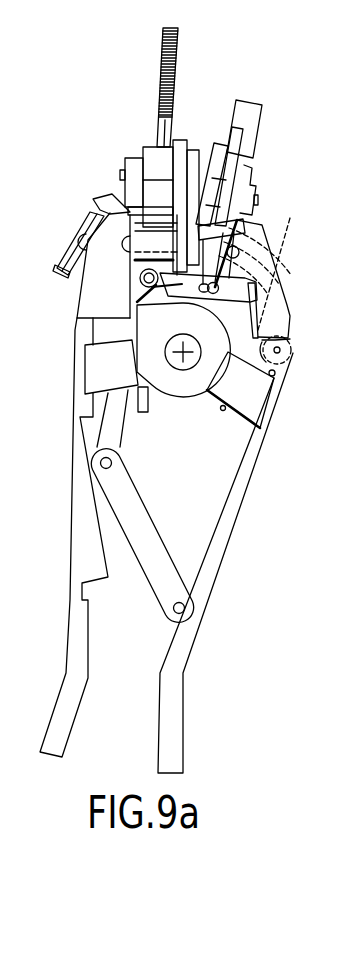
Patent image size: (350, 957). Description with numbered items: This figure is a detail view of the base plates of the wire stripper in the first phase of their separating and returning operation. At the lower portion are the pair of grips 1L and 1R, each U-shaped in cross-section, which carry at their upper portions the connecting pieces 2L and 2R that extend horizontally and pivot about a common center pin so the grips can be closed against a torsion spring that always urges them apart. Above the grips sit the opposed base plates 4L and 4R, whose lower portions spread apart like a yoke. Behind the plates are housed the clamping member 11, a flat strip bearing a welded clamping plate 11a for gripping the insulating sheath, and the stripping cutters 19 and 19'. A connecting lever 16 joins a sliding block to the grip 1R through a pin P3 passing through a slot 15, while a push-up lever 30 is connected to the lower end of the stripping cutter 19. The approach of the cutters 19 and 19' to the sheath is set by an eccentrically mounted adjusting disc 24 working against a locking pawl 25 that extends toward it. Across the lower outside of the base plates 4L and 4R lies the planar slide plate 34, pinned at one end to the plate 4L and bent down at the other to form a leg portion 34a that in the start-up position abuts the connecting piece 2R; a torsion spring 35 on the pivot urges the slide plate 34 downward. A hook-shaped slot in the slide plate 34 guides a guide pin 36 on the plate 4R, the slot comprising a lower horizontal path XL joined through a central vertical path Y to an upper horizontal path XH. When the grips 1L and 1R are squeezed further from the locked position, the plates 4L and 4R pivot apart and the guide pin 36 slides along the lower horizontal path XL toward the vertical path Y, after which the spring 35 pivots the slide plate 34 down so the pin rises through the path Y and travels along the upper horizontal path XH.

The stripping cutter 19 is at (150, 78).
The stripping cutter 19' is at (142, 110).
The base plate 4L is at (179, 147).
The base plate 4R is at (222, 143).
The clamping member 11 is at (238, 143).
The clamping plate 11a is at (256, 112).
The locking pawl 25 is at (101, 200).
The adjusting disc 24 is at (64, 258).
The guide pin 36 is at (226, 252).
The upper horizontal path XH is at (214, 289).
The slide plate 34 is at (262, 266).
The leg portion 34a is at (259, 328).
The connecting lever 16 is at (288, 276).
The central vertical path Y is at (262, 291).
The slot 15 is at (290, 339).
The pin P3 is at (281, 351).
The torsion spring 35 is at (130, 292).
The connecting piece 2L is at (92, 380).
The connecting piece 2R is at (262, 402).
The lower horizontal path XL is at (235, 340).
The push-up lever 30 is at (133, 503).
The grip 1L is at (77, 631).
The grip 1R is at (193, 652).